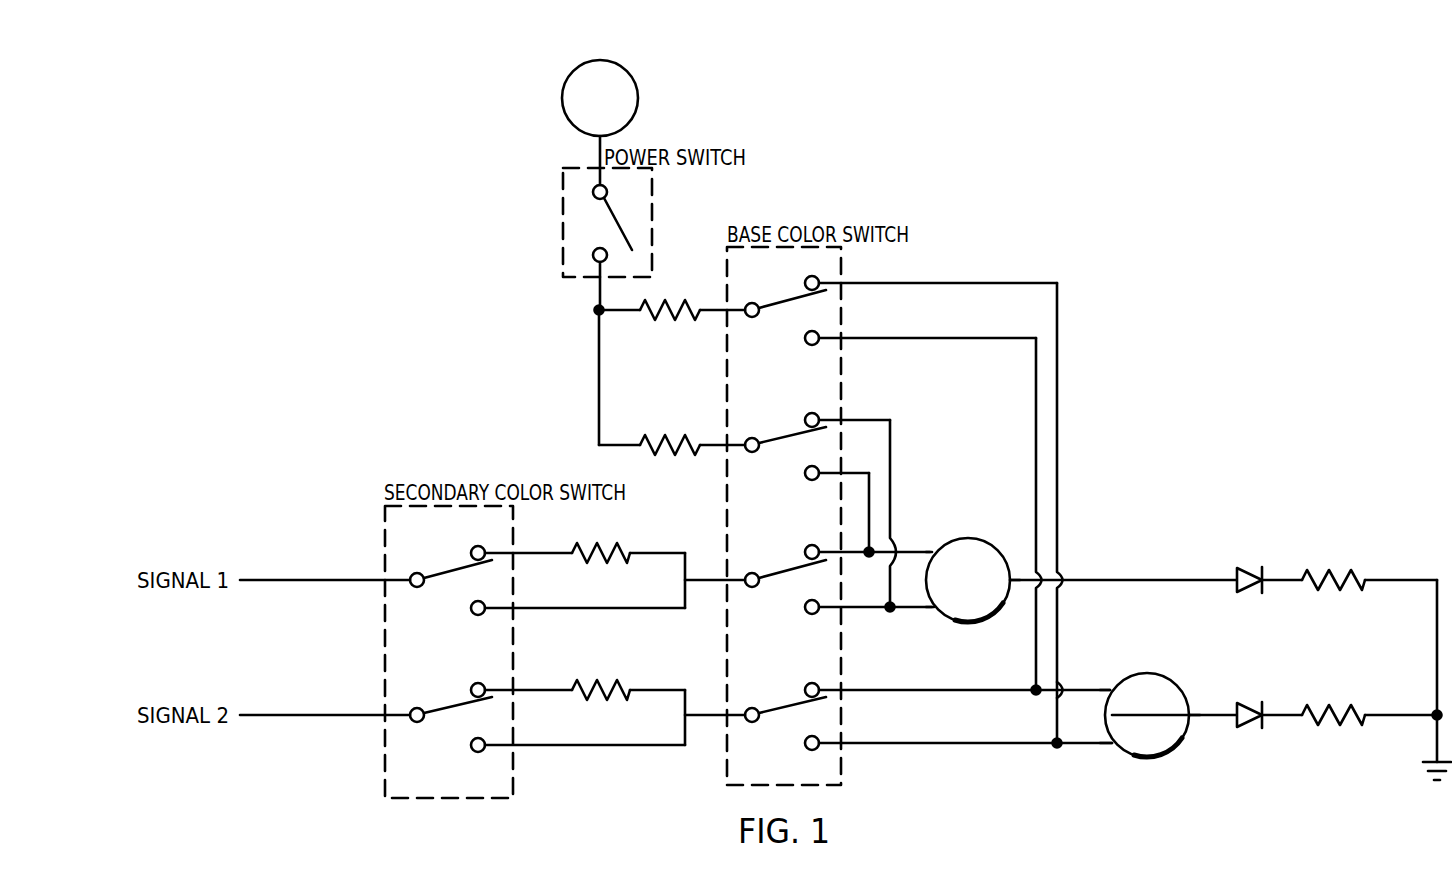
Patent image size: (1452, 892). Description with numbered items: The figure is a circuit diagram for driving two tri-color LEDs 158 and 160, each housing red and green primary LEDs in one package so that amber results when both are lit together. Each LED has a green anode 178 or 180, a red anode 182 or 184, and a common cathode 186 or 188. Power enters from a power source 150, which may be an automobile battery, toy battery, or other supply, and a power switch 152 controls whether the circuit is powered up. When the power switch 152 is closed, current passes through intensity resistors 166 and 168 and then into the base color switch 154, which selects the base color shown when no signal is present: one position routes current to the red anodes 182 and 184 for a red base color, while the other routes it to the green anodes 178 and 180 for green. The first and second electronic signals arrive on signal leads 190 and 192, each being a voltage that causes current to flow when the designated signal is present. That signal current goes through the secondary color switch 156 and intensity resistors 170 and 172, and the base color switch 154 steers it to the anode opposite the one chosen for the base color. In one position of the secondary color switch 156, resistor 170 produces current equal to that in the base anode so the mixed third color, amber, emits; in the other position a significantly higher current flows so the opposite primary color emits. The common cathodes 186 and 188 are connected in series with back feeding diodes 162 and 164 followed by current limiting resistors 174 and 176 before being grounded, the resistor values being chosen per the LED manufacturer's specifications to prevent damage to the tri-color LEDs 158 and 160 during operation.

The power source 150 is at (636, 85).
The power switch 152 is at (652, 183).
The base color switch 154 is at (841, 253).
The secondary color switch 156 is at (513, 512).
The tri-color LED 158 is at (996, 498).
The tri-color LED 160 is at (1148, 705).
The back feeding diode 162 is at (1247, 575).
The back feeding diode 164 is at (1248, 706).
The intensity resistor 166 is at (670, 302).
The intensity resistor 168 is at (670, 437).
The intensity resistor 170 is at (600, 545).
The intensity resistor 172 is at (600, 682).
The current limiting resistor 174 is at (1332, 575).
The current limiting resistor 176 is at (1333, 710).
The green anode 178 is at (937, 533).
The green anode 180 is at (1112, 685).
The red anode 182 is at (938, 620).
The red anode 184 is at (1113, 748).
The common cathode 186 is at (1012, 590).
The common cathode 188 is at (1190, 738).
The signal lead 190 is at (248, 580).
The signal lead 192 is at (248, 715).